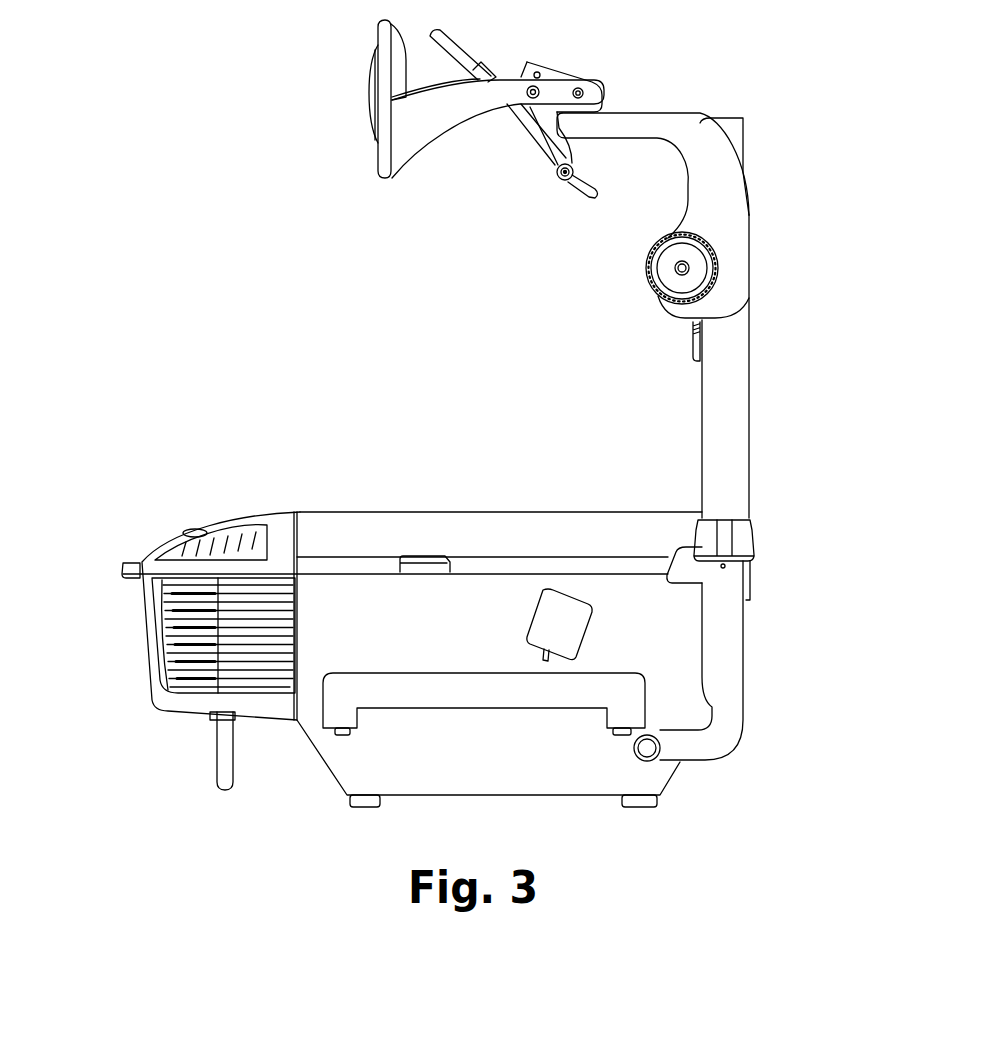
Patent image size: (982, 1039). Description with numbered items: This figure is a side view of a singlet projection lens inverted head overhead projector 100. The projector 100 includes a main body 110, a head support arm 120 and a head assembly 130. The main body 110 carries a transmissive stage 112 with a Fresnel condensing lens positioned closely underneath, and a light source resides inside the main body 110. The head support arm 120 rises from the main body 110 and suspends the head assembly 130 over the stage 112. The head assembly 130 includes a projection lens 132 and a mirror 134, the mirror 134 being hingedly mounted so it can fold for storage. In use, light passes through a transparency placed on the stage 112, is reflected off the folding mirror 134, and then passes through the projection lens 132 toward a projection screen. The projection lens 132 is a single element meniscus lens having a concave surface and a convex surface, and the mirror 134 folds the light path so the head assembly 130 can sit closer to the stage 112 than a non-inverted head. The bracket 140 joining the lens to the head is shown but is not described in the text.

The projector 100 is at (772, 83).
The main body 110 is at (337, 662).
The transmissive stage 112 is at (460, 512).
The head support arm 120 is at (738, 422).
The head assembly 130 is at (558, 48).
The projection lens 132 is at (370, 80).
The mirror 134 is at (527, 133).
The head arm 140 is at (447, 113).